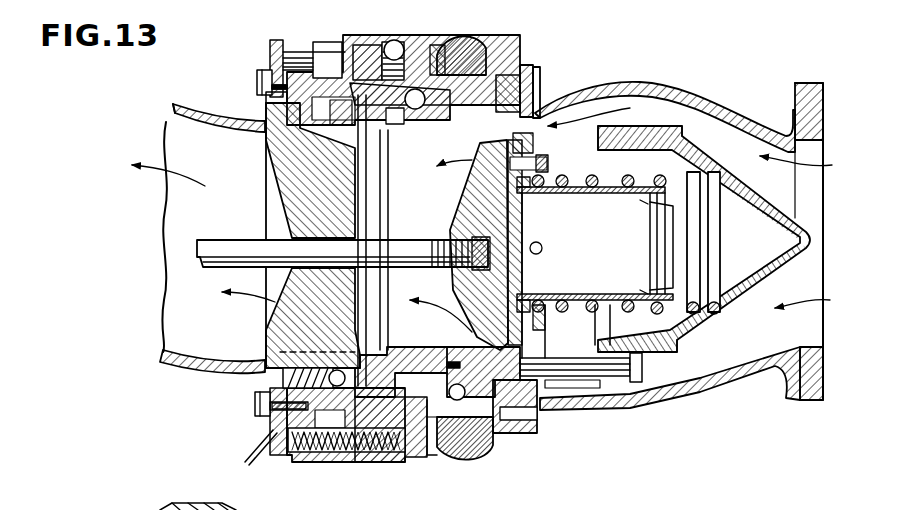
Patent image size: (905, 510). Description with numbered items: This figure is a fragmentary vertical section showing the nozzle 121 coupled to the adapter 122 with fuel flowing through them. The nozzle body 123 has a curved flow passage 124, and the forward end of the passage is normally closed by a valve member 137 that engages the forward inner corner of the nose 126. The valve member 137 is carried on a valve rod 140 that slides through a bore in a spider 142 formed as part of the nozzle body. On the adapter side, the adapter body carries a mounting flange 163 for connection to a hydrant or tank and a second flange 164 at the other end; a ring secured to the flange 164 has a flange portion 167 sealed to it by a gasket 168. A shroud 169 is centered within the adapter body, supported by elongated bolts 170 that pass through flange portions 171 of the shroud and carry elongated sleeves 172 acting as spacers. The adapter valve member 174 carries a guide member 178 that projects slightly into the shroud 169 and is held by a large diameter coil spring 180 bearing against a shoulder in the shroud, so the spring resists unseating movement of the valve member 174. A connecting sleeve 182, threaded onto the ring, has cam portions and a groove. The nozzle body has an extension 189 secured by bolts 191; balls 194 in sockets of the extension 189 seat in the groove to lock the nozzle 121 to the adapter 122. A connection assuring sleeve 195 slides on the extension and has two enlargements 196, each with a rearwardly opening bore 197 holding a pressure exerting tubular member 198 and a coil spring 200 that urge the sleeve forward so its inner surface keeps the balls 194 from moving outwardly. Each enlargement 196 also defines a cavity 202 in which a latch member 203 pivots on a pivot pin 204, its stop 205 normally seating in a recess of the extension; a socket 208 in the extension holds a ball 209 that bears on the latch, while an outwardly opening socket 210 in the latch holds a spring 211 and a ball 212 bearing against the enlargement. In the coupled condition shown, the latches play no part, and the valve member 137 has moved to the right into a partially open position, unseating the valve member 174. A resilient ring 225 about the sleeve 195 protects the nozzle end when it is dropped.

The nozzle 121 is at (205, 109).
The adapter 122 is at (636, 82).
The nozzle body 123 is at (183, 102).
The curved flow passage 124 is at (176, 219).
The nose 126 is at (438, 354).
The valve member 137 is at (462, 198).
The valve rod 140 is at (232, 250).
The spider 142 is at (292, 160).
The mounting flange 163 is at (806, 402).
The second flange 164 is at (538, 82).
The flange portion 167 is at (505, 433).
The sealing ring or gasket 168 is at (142, 509).
The shroud 169 is at (736, 306).
The elongated bolts 170 is at (572, 400).
The flange portions 171 is at (643, 388).
The elongated sleeves 172 is at (548, 354).
The valve member 174 is at (514, 232).
The guide member 178 is at (663, 320).
The coil spring 180 is at (718, 250).
The connecting sleeve or collar 182 is at (412, 358).
The extension 189 is at (388, 445).
The bolts 191 is at (258, 82).
The balls 194 is at (452, 440).
The connection assuring sleeve or collar 195 is at (548, 56).
The enlargements 196 is at (352, 46).
The rearwardly opening bore 197 is at (380, 462).
The pressure exerting tubular member 198 is at (268, 70).
The coil spring 200 is at (354, 455).
The cavity 202 is at (476, 24).
The latch member 203 is at (392, 50).
The pivot pin 204 is at (366, 47).
The stop 205 is at (508, 74).
The socket 208 is at (394, 124).
The ball 209 is at (420, 109).
The outwardly opening socket 210 is at (500, 38).
The spring 211 is at (332, 48).
The ball 212 is at (432, 33).
The resilient ring 225 is at (468, 460).